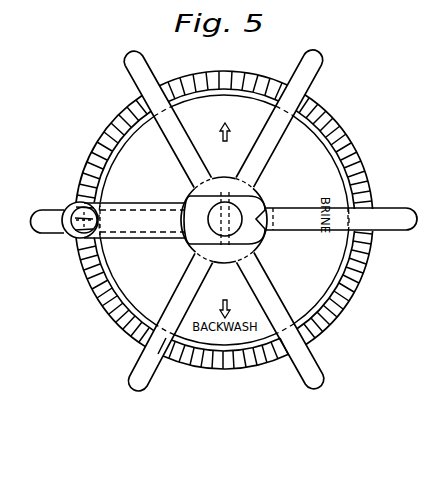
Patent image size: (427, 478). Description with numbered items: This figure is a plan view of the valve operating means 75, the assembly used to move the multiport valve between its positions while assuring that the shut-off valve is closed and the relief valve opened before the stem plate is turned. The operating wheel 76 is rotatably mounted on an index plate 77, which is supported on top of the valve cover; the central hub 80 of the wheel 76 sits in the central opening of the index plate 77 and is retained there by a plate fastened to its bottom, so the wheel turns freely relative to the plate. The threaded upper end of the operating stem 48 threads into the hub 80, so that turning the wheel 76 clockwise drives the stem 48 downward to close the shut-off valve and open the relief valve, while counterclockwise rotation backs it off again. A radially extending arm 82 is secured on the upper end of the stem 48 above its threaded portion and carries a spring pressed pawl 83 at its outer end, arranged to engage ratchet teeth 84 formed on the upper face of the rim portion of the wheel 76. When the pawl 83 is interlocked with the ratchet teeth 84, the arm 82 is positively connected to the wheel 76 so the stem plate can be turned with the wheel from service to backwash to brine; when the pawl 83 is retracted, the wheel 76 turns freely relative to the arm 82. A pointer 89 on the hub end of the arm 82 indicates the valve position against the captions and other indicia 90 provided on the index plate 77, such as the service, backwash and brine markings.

The operating stem 48 is at (244, 212).
The valve operating means 75 is at (334, 110).
The operating wheel 76 is at (348, 298).
The index plate 77 is at (324, 159).
The hub 80 is at (222, 183).
The radially extending arm 82 is at (141, 240).
The spring pressed pawl 83 is at (85, 228).
The ratchet teeth 84 is at (98, 147).
The pointer 89 is at (268, 237).
The captions and indicia 90 is at (234, 133).